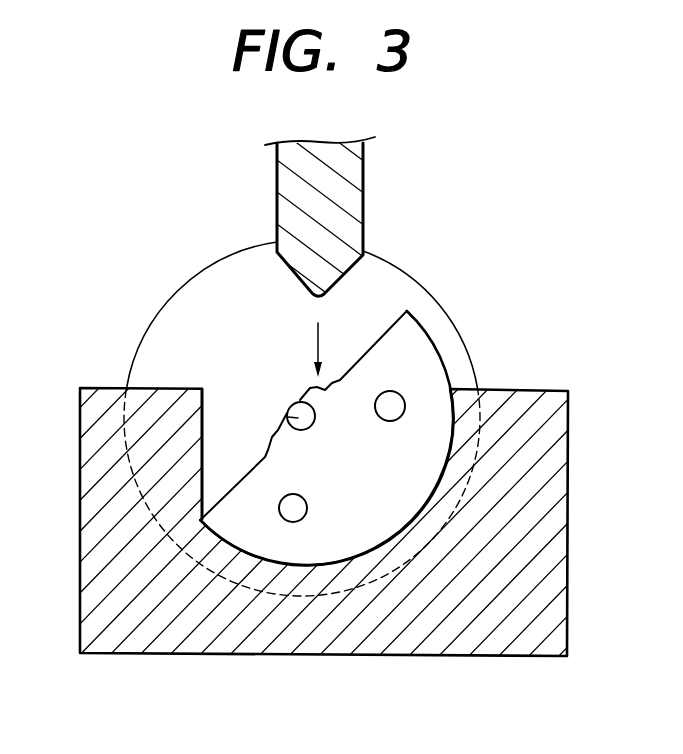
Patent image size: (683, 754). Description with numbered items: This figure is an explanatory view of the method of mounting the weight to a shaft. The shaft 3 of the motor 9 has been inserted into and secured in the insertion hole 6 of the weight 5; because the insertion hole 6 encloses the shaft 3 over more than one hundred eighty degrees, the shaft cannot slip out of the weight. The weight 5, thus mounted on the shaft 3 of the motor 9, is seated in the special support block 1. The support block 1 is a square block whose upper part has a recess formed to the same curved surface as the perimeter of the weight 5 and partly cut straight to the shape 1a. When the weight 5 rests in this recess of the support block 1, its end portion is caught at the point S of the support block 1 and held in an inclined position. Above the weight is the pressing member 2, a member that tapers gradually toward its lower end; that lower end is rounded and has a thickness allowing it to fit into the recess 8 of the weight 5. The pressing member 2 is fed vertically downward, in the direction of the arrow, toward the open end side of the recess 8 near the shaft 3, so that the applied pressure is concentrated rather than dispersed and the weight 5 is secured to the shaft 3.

The support block 1 is at (547, 537).
The straight cut shape 1a is at (200, 452).
The pressing member 2 is at (347, 193).
The shaft 3 is at (290, 415).
The weight 5 is at (415, 352).
The insertion hole 6 is at (307, 430).
The recess 8 is at (315, 379).
The motor 9 is at (435, 291).
The point S is at (208, 517).